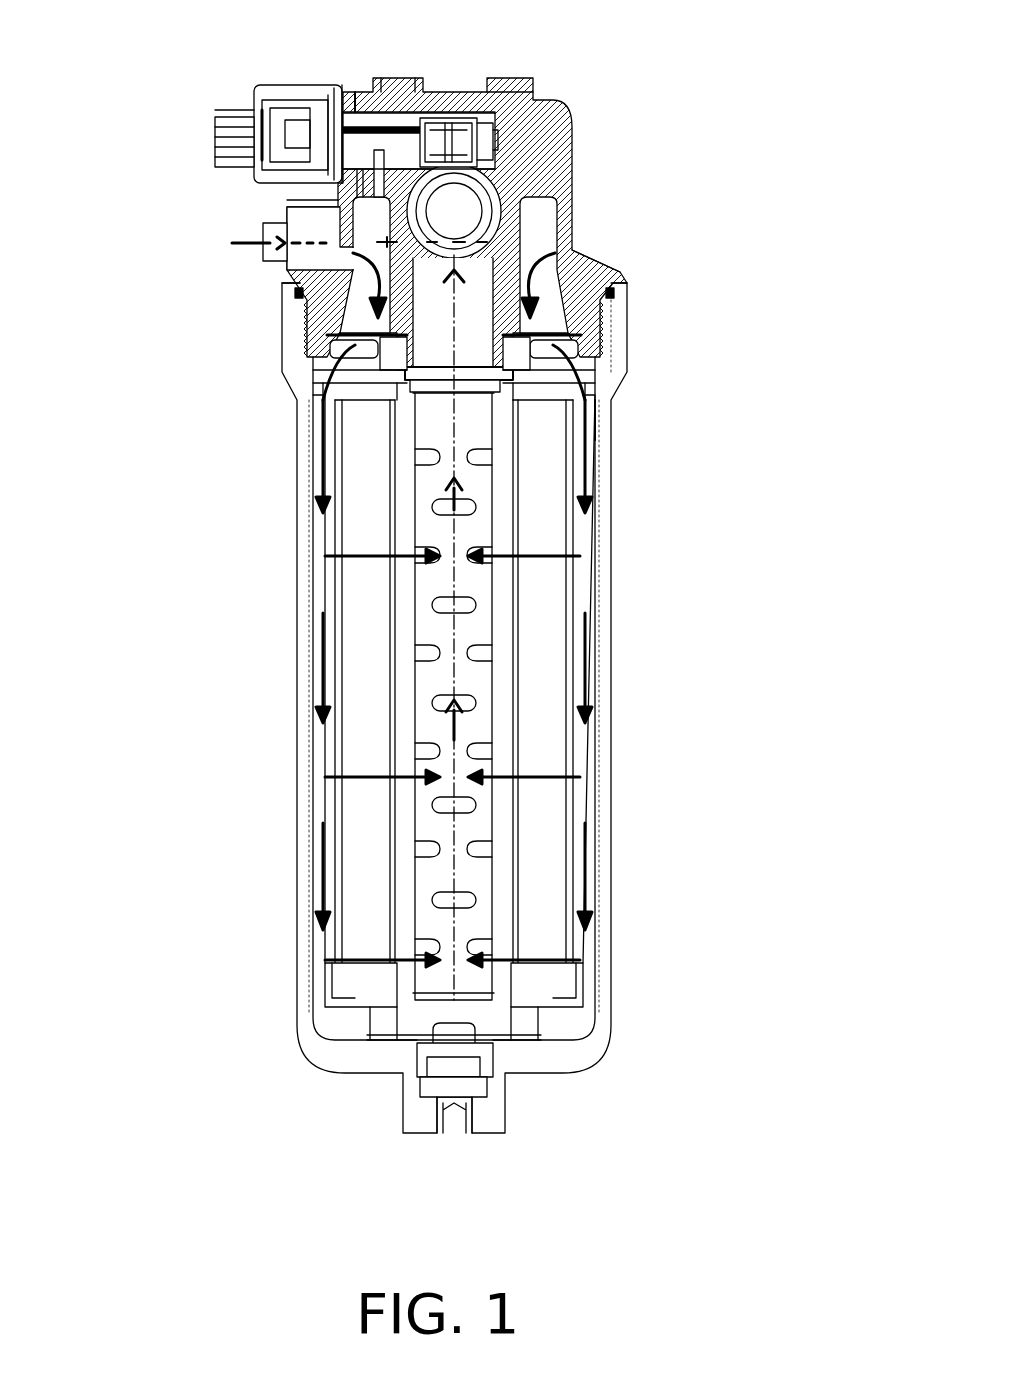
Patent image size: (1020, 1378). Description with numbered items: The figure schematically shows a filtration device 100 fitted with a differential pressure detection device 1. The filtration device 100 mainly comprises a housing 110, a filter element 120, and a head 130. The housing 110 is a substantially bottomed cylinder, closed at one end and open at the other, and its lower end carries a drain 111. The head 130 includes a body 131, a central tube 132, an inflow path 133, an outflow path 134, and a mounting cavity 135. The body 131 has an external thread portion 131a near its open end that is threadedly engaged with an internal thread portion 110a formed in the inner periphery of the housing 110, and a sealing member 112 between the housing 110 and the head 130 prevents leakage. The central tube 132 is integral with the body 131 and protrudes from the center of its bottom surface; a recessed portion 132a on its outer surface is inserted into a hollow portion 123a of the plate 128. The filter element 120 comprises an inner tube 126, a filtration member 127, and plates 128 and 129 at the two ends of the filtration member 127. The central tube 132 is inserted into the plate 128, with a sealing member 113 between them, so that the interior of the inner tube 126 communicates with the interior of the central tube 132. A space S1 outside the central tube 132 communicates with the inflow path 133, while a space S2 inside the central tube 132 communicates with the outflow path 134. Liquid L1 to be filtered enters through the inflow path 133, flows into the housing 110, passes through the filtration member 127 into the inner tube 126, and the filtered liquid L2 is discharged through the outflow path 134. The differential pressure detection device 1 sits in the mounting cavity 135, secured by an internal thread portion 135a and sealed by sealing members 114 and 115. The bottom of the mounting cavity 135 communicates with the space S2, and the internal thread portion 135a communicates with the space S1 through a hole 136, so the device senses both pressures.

The differential pressure detection device 1 is at (268, 88).
The filtration device 100 is at (808, 57).
The housing 110 is at (625, 620).
The internal thread portion 110a is at (603, 340).
The drain 111 is at (453, 1110).
The sealing member 112 is at (299, 293).
The sealing member 113 is at (600, 368).
The sealing member 114 is at (360, 92).
The sealing member 115 is at (487, 113).
The filter element 120 is at (439, 688).
The hollow portion 123a is at (330, 380).
The inner tube 126 is at (417, 663).
The filtration member 127 is at (368, 636).
The plate 128 is at (390, 383).
The plate 129 is at (345, 1003).
The head 130 is at (545, 130).
The body 131 is at (573, 288).
The external thread portion 131a is at (603, 327).
The central tube 132 is at (500, 278).
The recessed portion 132a is at (360, 308).
The inflow path 133 is at (262, 222).
The outflow path 134 is at (467, 205).
The mounting cavity 135 is at (497, 78).
The internal thread portion 135a is at (388, 78).
The hole 136 is at (338, 195).
The space S1 is at (307, 310).
The space S2 is at (473, 267).
The liquid to be filtered L1 is at (743, 449).
The liquid after filtration L2 is at (423, 802).